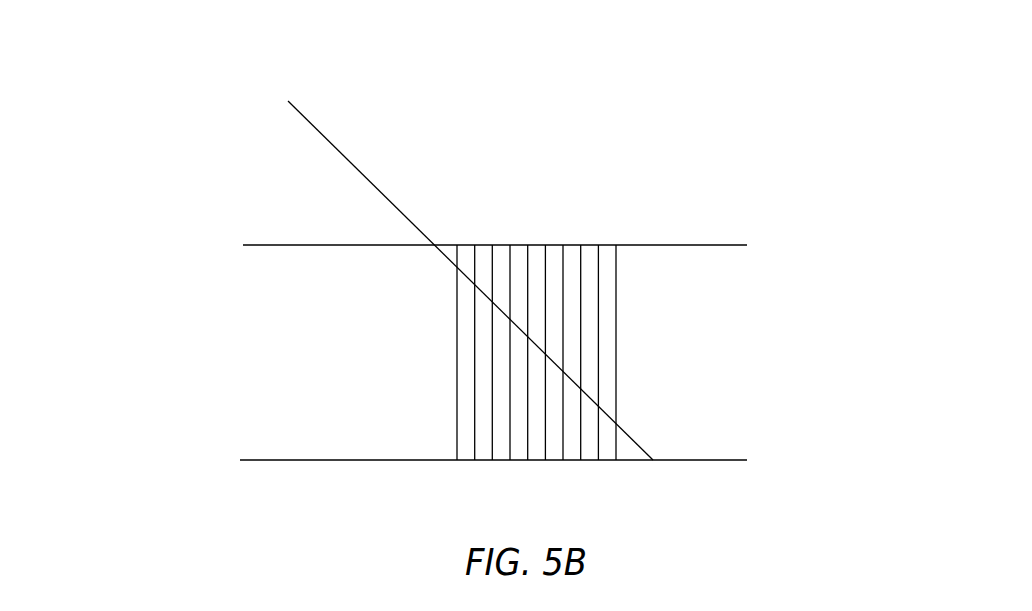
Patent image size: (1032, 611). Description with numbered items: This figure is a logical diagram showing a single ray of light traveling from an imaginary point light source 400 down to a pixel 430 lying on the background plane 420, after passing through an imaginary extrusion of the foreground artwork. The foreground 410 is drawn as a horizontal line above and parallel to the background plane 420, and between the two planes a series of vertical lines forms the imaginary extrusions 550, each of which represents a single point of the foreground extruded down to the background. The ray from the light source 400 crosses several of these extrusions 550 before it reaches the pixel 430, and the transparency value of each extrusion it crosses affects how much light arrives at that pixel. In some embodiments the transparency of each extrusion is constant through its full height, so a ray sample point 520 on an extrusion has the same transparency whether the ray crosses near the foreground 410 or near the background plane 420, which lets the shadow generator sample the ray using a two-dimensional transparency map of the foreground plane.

The light source 400 is at (435, 250).
The foreground 410 is at (395, 202).
The background plane 420 is at (395, 417).
The imaginary extrusions 550 is at (511, 245).
The extrusion intersection point 520 is at (709, 401).
The pixel 430 is at (774, 483).